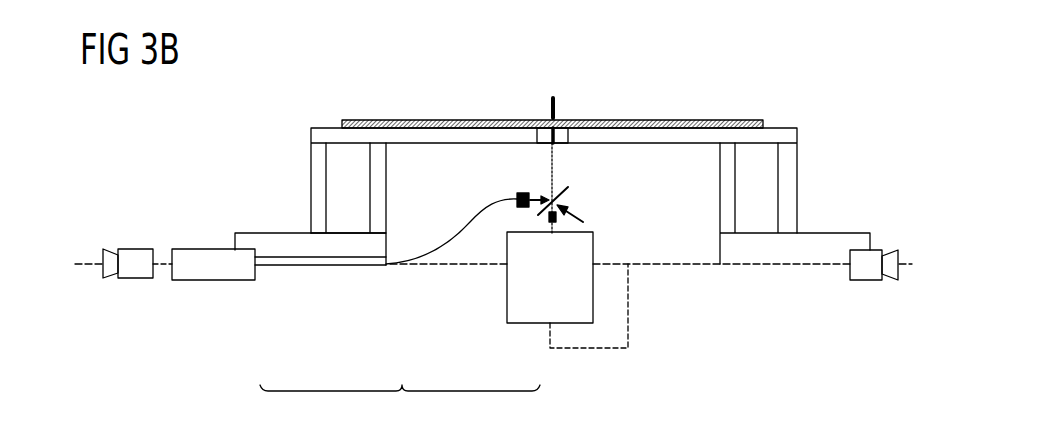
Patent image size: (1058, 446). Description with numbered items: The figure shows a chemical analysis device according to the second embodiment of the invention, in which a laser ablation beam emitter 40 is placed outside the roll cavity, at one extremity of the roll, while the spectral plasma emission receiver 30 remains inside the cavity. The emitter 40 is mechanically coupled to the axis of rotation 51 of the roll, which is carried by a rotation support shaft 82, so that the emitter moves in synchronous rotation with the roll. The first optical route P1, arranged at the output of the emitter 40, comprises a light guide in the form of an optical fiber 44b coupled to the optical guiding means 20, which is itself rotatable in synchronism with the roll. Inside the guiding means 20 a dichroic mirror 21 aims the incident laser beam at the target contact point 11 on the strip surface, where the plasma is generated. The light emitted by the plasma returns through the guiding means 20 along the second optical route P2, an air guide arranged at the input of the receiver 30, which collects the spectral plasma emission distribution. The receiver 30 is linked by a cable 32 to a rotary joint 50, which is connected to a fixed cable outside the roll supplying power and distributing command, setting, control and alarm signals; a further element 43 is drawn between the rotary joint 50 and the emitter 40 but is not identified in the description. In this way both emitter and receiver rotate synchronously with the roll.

The target contact point 11 is at (553, 98).
The optical guiding means 20 is at (585, 147).
The dichroic mirror 21 is at (572, 198).
The spectral plasma emission receiver 30 is at (523, 324).
The cable 32 is at (631, 313).
The laser ablation beam emitter 40 is at (209, 280).
The light beam 43 is at (158, 262).
The optical fiber 44b is at (443, 245).
The rotary joint 50 is at (136, 279).
The axis of rotation 51 is at (101, 262).
The rotation support shaft 82 is at (255, 232).
The first optical route P1 is at (400, 407).
The second optical route P2 is at (585, 221).